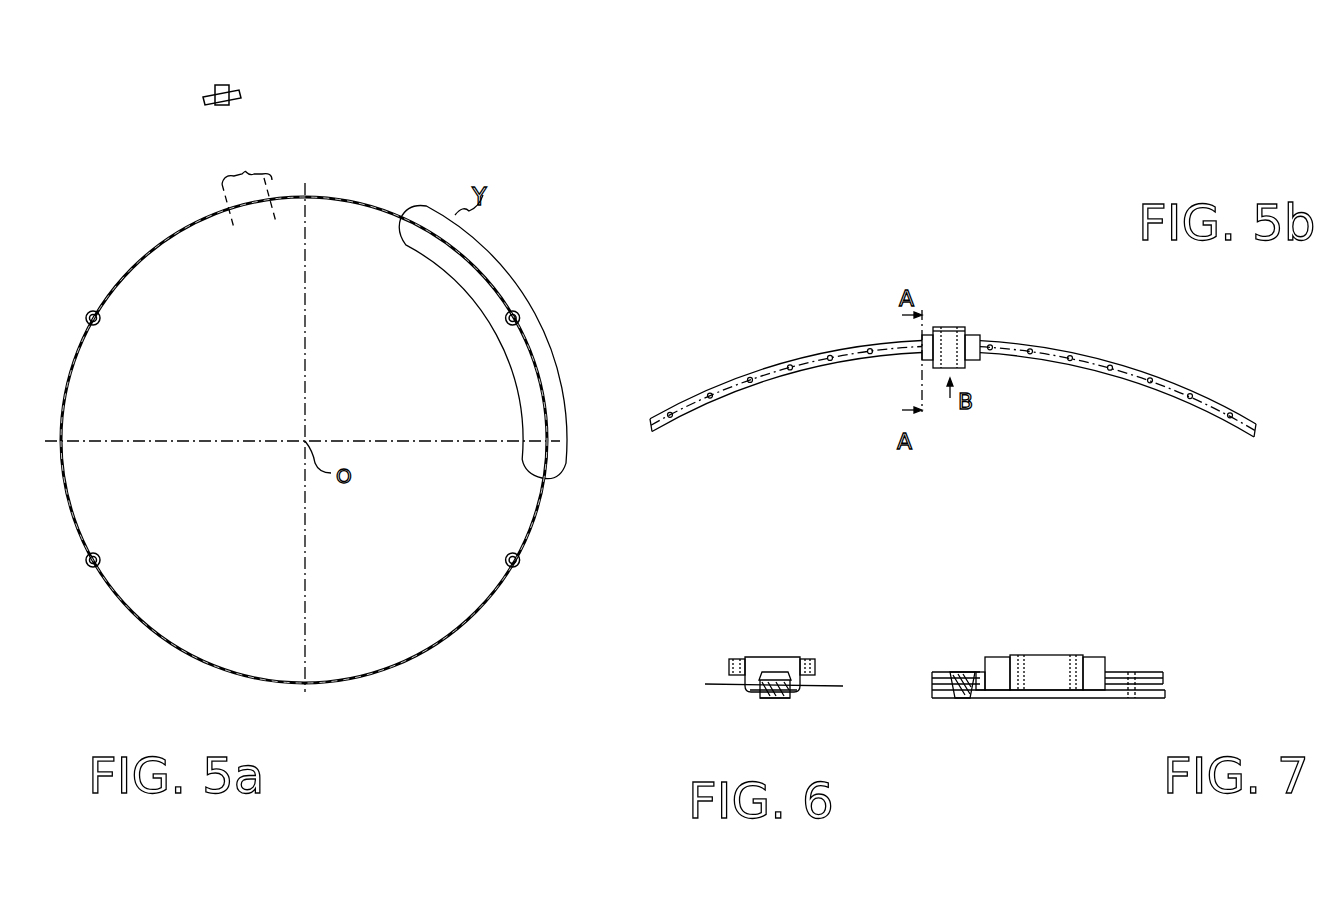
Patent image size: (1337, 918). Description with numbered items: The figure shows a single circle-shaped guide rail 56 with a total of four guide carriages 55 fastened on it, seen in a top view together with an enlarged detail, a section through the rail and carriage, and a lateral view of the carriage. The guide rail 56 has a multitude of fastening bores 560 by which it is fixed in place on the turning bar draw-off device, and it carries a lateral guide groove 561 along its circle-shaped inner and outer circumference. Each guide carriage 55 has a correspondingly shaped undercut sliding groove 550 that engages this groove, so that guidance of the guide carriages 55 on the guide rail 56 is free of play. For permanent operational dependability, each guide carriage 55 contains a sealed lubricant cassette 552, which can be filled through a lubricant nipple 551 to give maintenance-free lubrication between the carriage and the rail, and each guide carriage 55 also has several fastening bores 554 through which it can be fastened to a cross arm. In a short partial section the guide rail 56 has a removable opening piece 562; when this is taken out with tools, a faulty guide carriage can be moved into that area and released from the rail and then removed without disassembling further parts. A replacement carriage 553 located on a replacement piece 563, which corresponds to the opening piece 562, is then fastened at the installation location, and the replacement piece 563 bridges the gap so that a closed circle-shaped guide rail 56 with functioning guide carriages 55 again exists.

In FIG. 5a, the guide carriage 55 is at (100, 322).
In FIG. 5b, the guide carriage 55 is at (950, 326).
In FIG. 6, the guide carriage 55 is at (784, 656).
In FIG. 7, the guide carriage 55 is at (1045, 660).
In FIG. 5a, the guide rail 56 is at (352, 197).
In FIG. 5b, the guide rail 56 is at (1086, 353).
In FIG. 6, the guide rail 56 is at (791, 698).
In FIG. 7, the guide rail 56 is at (1150, 672).
In FIG. 6, the undercut sliding groove 550 is at (770, 668).
In FIG. 6, the lubricant nipple 551 is at (770, 660).
In FIG. 7, the lubricant nipple 551 is at (978, 665).
In FIG. 7, the sealed lubricant cassette 552 is at (996, 657).
In FIG. 5a, the replacement carriage 553 is at (220, 86).
In FIG. 5b, the fastening bores 554 is at (966, 331).
In FIG. 6, the fastening bores 554 is at (808, 657).
In FIG. 5b, the fastening bores 560 is at (1116, 372).
In FIG. 6, the fastening bores 560 is at (772, 700).
In FIG. 7, the fastening bores 560 is at (958, 672).
In FIG. 6, the lateral guide groove 561 is at (778, 688).
In FIG. 5a, the removable opening piece 562 is at (244, 185).
In FIG. 5a, the replacement piece 563 is at (236, 90).